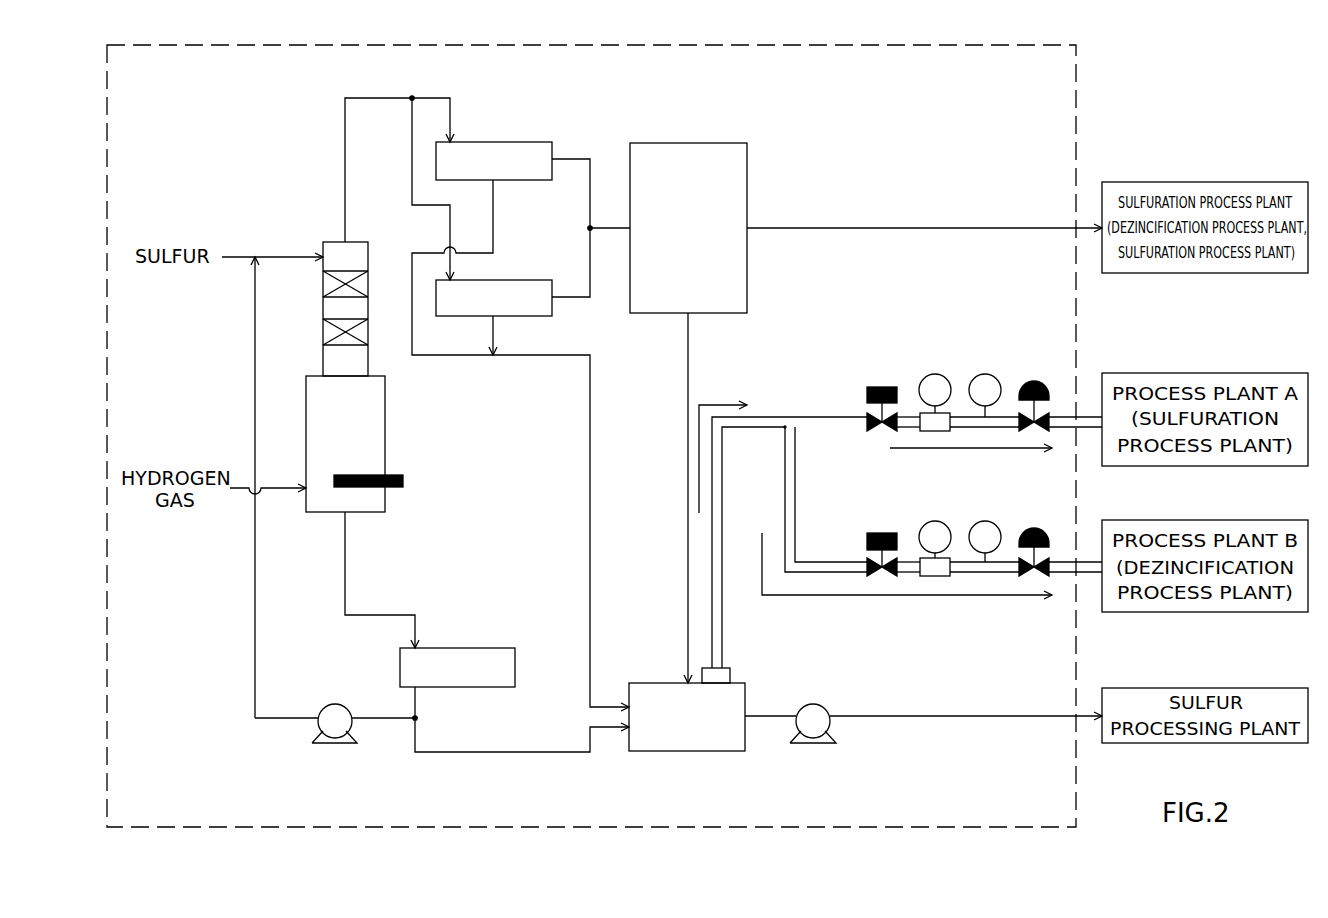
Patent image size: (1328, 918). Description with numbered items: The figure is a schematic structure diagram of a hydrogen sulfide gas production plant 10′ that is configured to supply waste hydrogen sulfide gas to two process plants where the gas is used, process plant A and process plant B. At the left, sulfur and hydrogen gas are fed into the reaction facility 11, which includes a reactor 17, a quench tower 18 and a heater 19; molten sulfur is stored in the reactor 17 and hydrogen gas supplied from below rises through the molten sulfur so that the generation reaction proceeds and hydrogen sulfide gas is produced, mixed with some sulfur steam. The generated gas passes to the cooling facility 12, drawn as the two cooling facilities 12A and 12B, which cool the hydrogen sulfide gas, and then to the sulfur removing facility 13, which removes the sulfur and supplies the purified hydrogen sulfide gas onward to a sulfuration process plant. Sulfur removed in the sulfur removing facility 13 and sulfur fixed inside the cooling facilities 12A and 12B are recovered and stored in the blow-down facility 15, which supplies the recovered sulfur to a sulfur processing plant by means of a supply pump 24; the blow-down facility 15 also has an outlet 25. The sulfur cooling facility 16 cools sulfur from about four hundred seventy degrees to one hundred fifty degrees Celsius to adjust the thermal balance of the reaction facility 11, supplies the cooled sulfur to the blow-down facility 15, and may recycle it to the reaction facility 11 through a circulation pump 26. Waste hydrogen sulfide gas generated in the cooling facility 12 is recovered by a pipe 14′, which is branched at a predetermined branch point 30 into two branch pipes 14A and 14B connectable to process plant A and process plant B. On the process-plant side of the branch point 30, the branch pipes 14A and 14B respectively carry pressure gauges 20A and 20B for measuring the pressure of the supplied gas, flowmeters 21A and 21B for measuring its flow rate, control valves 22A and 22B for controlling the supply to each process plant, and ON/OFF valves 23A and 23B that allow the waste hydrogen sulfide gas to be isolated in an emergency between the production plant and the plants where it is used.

The hydrogen sulfide gas production plant 10′ is at (1029, 73).
The reaction facility 11 is at (369, 377).
The cooling facility 12 is at (513, 187).
The cooling facility 12A is at (535, 142).
The cooling facility 12B is at (535, 280).
The sulfur removing facility 13 is at (688, 143).
The pipe 14′ is at (761, 415).
The branch pipe 14A is at (819, 417).
The branch pipe 14B is at (819, 562).
The blow-down facility 15 is at (722, 751).
The sulfur cooling facility 16 is at (480, 648).
The reactor 17 is at (385, 434).
The quench tower 18 is at (323, 307).
The heater 19 is at (403, 482).
The pressure gauge 20A is at (985, 374).
The pressure gauge 20B is at (985, 521).
The flowmeter 21A is at (935, 374).
The flowmeter 21B is at (935, 521).
The control valve 22A is at (1034, 386).
The control valve 22B is at (1034, 533).
The ON/OFF valve 23A is at (882, 387).
The ON/OFF valve 23B is at (882, 533).
The supply pump 24 is at (813, 704).
The outlet 25 is at (735, 671).
The circulation pump 26 is at (333, 704).
The branch point 30 is at (784, 432).